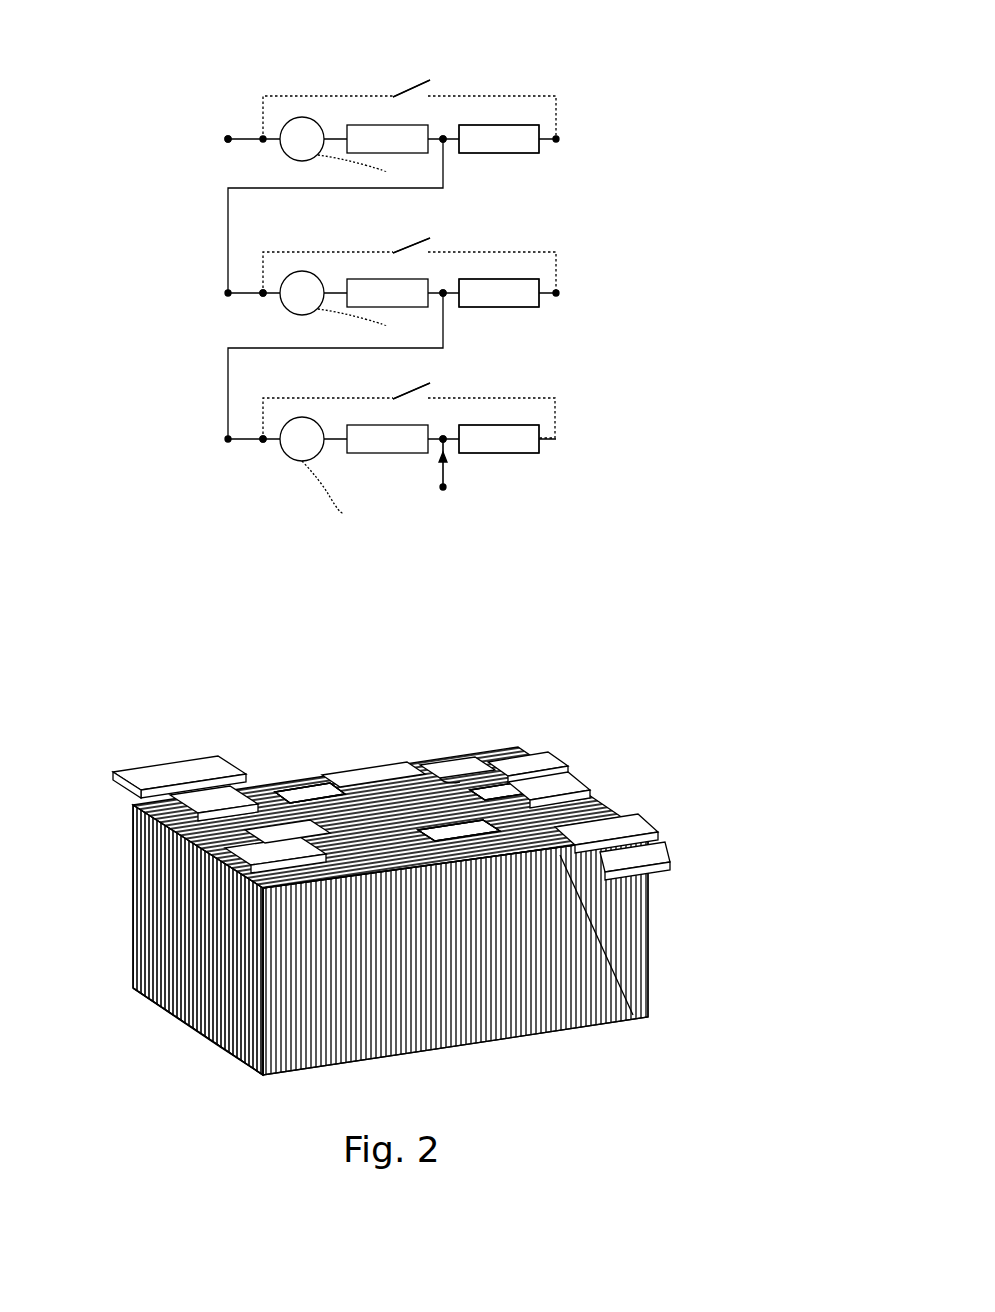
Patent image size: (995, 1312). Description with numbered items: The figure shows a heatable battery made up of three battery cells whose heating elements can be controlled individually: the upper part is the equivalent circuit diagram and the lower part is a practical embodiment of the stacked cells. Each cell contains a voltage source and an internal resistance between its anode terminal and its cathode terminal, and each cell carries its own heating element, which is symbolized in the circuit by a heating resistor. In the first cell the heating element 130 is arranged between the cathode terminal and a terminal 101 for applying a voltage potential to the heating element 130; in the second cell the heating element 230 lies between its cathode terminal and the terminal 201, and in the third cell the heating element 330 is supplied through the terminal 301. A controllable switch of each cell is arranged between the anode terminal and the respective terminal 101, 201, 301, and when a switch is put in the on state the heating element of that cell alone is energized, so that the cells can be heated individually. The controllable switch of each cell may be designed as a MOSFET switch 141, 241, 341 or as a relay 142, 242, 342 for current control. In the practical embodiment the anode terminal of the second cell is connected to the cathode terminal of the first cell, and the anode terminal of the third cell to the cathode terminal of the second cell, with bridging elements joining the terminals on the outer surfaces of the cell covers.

The terminal for applying a voltage potential to the heating element 101 is at (360, 780).
The terminal for applying a voltage potential to the heating element 201 is at (360, 787).
The terminal for applying a voltage potential to the heating element 301 is at (633, 1017).
The heating element 130 is at (497, 123).
The heating element 230 is at (500, 313).
The heating element 330 is at (513, 457).
The MOSFET switch 141 is at (266, 725).
The relay 142 is at (289, 725).
The MOSFET switch 241 is at (524, 721).
The relay 242 is at (545, 721).
The MOSFET switch 341 is at (487, 955).
The relay 342 is at (507, 955).